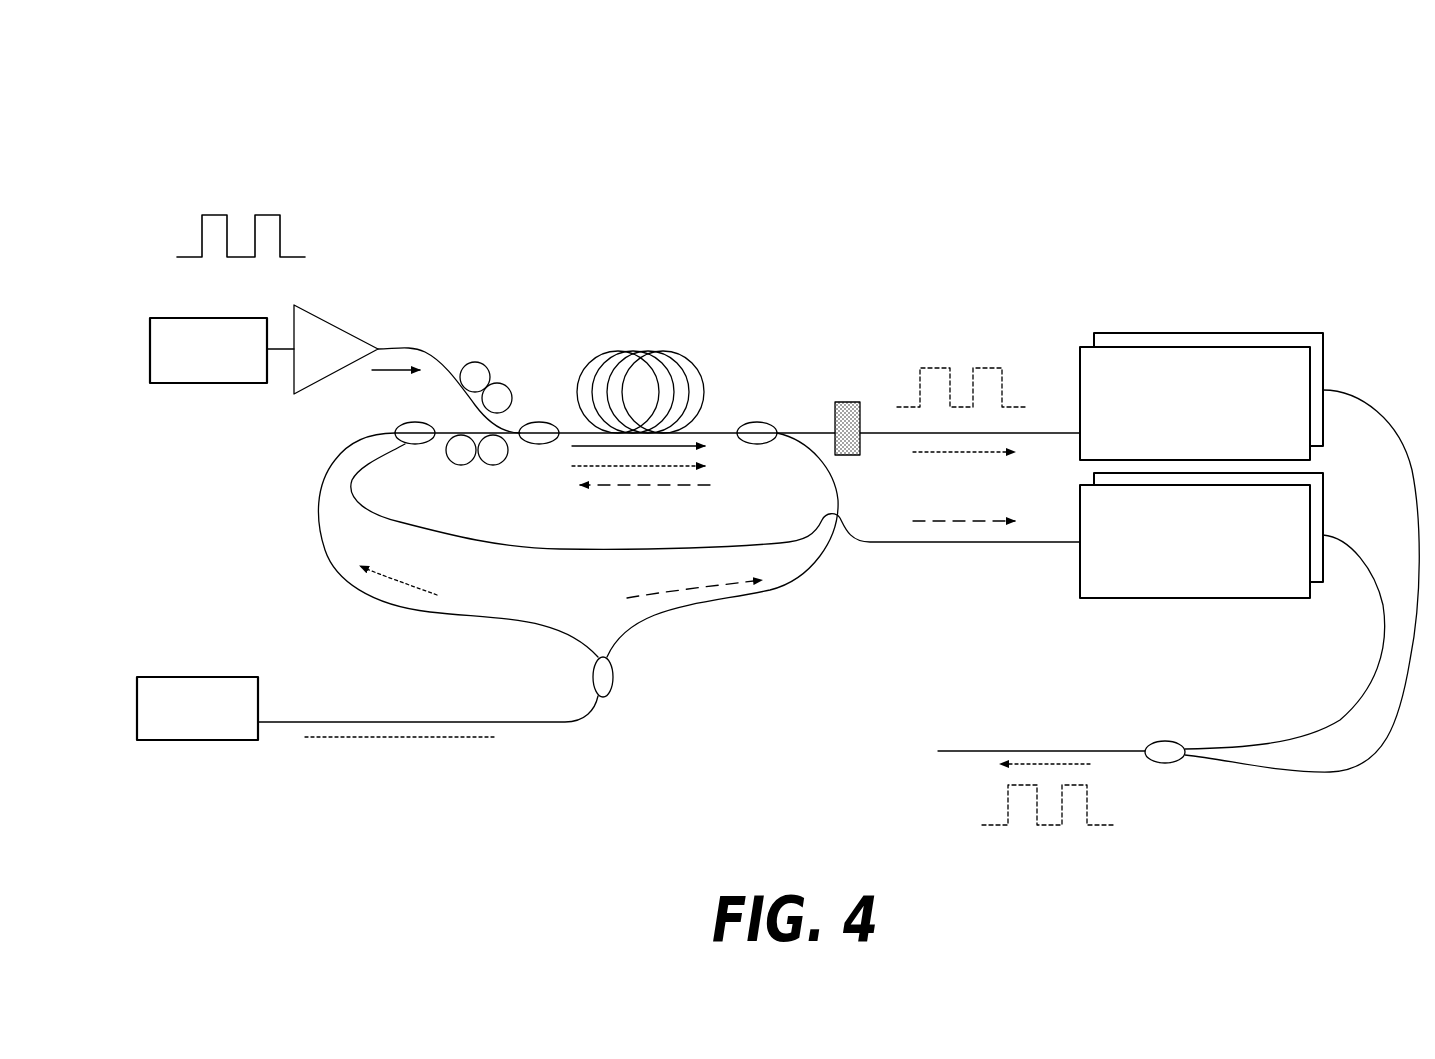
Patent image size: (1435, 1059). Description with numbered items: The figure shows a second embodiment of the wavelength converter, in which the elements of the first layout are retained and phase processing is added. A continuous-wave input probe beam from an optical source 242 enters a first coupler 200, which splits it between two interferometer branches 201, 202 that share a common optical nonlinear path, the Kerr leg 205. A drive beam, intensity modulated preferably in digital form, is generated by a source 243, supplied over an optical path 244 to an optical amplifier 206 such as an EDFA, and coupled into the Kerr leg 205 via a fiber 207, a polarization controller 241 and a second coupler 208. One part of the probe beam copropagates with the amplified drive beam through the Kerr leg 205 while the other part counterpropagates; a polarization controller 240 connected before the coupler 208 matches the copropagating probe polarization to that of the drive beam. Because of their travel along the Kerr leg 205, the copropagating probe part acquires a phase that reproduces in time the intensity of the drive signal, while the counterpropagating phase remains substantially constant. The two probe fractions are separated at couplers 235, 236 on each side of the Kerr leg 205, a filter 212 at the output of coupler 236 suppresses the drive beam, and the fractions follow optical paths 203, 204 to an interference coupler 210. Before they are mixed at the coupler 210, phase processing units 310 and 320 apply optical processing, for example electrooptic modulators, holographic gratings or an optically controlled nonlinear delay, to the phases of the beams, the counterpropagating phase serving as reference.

The first coupler 200 is at (614, 677).
The interferometer branch 201 is at (320, 543).
The interferometer branch 202 is at (808, 580).
The optical path 203 is at (970, 545).
The optical path 204 is at (1043, 430).
The Kerr leg 205 is at (643, 352).
The optical amplifier 206 is at (340, 325).
The fiber 207 is at (430, 350).
The second coupler 208 is at (539, 444).
The interference coupler 210 is at (1168, 741).
The filter 212 is at (850, 400).
The coupler 235 is at (413, 445).
The coupler 236 is at (755, 445).
The polarization controller 240 is at (478, 465).
The polarization controller 241 is at (512, 384).
The optical source 242 is at (195, 742).
The source 243 is at (207, 385).
The optical path 244 is at (280, 352).
The phase processing unit 310 is at (1200, 346).
The phase processing unit 320 is at (1197, 600).